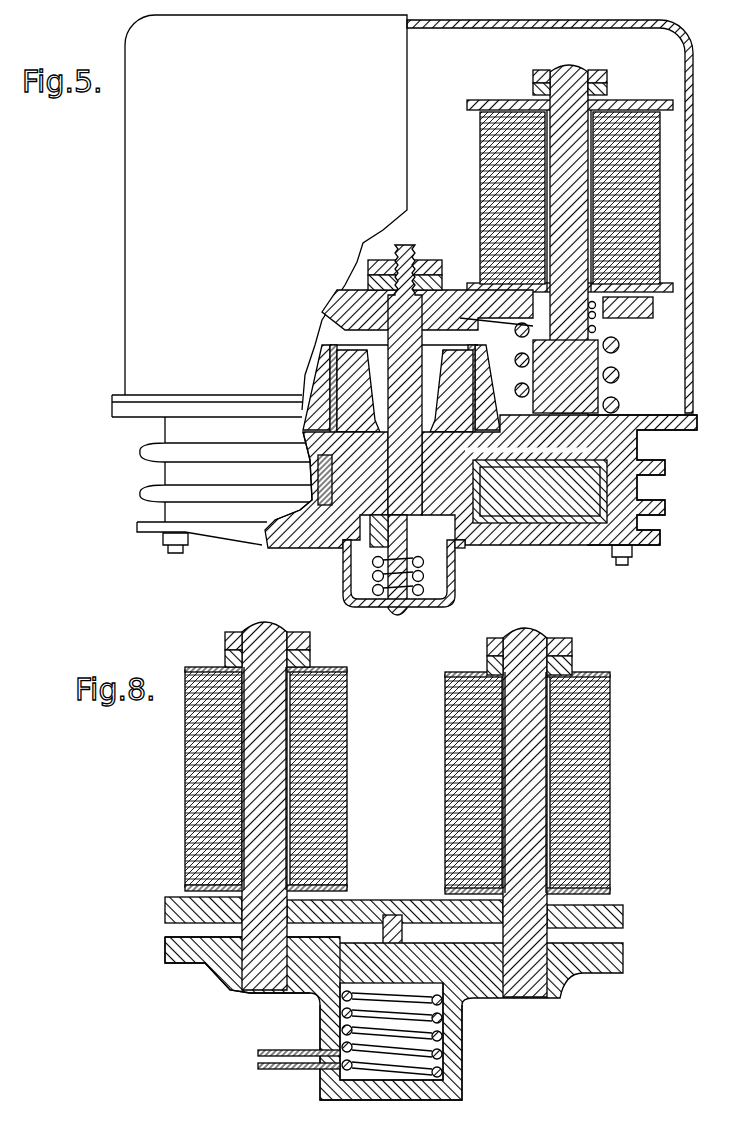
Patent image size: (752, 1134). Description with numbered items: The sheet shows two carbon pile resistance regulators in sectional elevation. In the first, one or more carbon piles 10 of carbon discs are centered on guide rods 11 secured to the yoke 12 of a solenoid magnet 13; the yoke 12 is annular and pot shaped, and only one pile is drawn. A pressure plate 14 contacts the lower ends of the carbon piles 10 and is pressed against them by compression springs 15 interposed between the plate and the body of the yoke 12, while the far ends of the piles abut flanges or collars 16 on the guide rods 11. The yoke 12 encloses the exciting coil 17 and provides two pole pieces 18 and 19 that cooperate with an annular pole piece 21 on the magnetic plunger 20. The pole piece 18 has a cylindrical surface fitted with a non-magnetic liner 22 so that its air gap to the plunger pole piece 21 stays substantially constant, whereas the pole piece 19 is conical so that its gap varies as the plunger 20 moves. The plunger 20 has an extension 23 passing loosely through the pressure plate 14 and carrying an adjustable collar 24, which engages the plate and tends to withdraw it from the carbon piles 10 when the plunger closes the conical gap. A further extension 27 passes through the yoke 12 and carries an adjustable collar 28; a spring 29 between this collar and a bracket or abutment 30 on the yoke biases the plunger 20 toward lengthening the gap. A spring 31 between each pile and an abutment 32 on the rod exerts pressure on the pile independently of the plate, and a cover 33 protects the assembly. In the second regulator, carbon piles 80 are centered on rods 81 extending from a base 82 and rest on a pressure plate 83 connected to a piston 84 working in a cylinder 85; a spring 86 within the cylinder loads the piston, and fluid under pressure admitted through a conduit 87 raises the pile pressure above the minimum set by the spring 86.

In FIG. 5, the carbon pile 10 is at (480, 138).
In FIG. 5, the guide rod 11 is at (598, 388).
In FIG. 5, the yoke 12 is at (642, 442).
In FIG. 5, the solenoid magnet 13 is at (397, 551).
In FIG. 5, the pressure plate 14 is at (647, 318).
In FIG. 5, the compression spring 15 is at (621, 377).
In FIG. 5, the flange or collar 16 is at (594, 72).
In FIG. 5, the exciting coil 17 is at (543, 500).
In FIG. 5, the pole piece 18 is at (322, 368).
In FIG. 5, the pole piece 19 is at (312, 442).
In FIG. 5, the magnetic plunger 20 is at (367, 370).
In FIG. 5, the plunger pole piece 21 is at (343, 397).
In FIG. 5, the non-magnetic liner 22 is at (332, 358).
In FIG. 5, the extension 23 is at (413, 368).
In FIG. 5, the adjustable collar 24 is at (425, 260).
In FIG. 5, the further extension 27 is at (395, 612).
In FIG. 5, the adjustable collar 28 is at (378, 553).
In FIG. 5, the spring 29 is at (424, 572).
In FIG. 5, the bracket or abutment 30 is at (367, 607).
In FIG. 5, the spring 31 is at (597, 330).
In FIG. 5, the abutment 32 is at (612, 354).
In FIG. 5, the cover 33 is at (266, 212).
In FIG. 8, the carbon pile 80 is at (203, 743).
In FIG. 8, the rod 81 is at (252, 628).
In FIG. 8, the base 82 is at (197, 950).
In FIG. 8, the pressure plate 83 is at (175, 907).
In FIG. 8, the piston 84 is at (455, 996).
In FIG. 8, the cylinder 85 is at (330, 1015).
In FIG. 8, the spring 86 is at (440, 1038).
In FIG. 8, the conduit 87 is at (290, 1070).